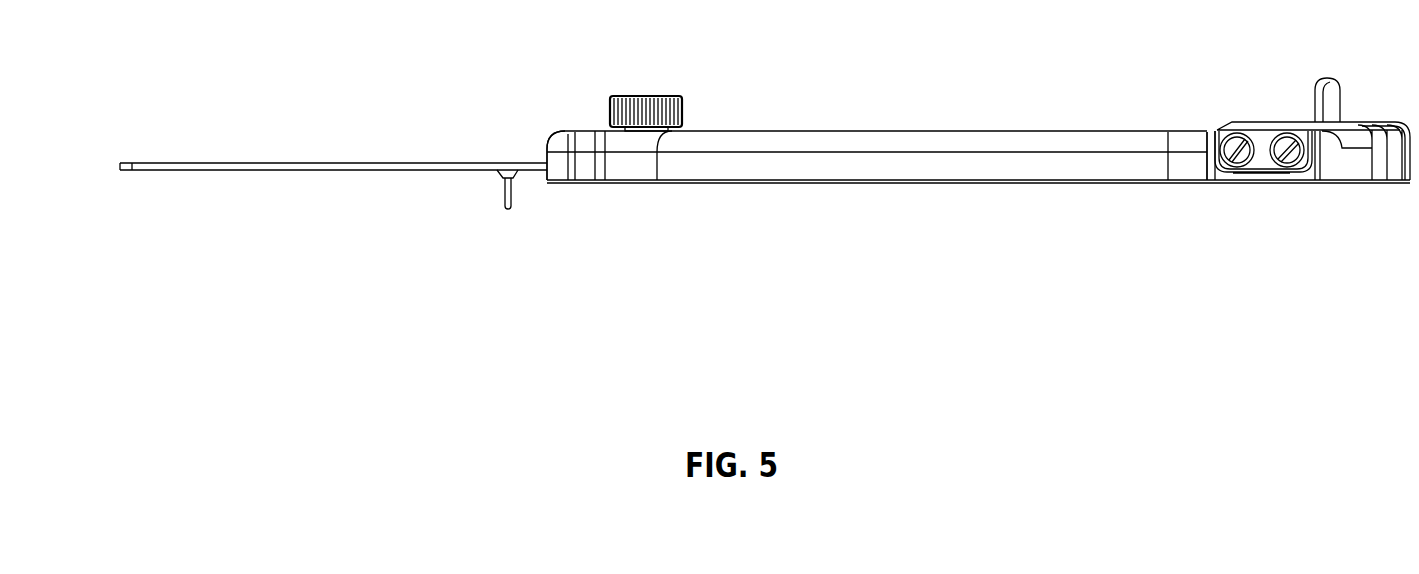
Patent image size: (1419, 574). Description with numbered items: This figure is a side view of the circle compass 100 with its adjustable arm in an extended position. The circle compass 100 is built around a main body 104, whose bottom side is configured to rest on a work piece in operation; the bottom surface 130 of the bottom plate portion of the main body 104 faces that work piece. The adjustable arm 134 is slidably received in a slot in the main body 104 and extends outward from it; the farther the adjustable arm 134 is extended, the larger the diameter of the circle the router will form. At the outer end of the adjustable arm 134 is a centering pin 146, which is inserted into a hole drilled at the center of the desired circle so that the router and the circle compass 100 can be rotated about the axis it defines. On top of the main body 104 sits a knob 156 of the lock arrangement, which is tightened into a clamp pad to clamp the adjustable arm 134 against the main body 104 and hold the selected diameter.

The circle compass 100 is at (868, 315).
The main body 104 is at (937, 168).
The bottom surface 130 is at (730, 183).
The adjustable arm 134 is at (185, 172).
The centering pin 146 is at (503, 211).
The knob 156 is at (618, 96).